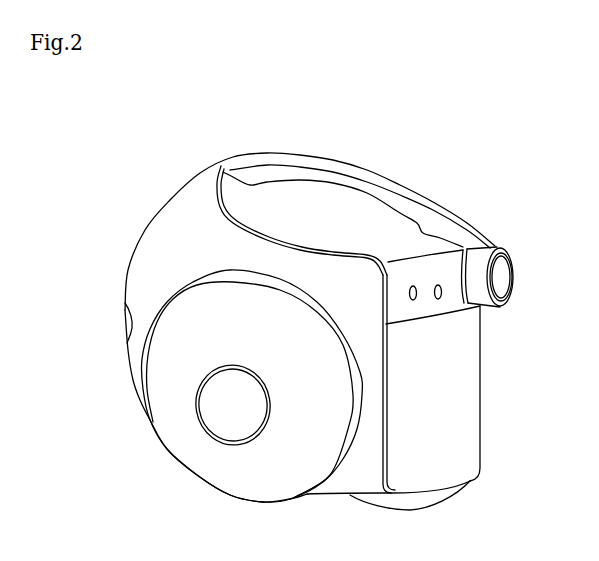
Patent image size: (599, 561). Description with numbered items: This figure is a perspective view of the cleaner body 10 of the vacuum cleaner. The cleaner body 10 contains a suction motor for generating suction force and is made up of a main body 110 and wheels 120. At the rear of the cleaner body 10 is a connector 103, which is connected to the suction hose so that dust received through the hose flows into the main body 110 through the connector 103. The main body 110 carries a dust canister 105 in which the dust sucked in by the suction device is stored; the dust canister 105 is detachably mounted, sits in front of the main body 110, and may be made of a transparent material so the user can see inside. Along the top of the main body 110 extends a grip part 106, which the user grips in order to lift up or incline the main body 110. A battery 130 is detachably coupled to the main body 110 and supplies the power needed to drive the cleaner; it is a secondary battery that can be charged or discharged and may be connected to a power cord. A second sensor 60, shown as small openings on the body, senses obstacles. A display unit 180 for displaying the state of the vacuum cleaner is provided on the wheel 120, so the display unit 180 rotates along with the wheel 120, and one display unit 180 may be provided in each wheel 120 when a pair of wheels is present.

The cleaner body 10 is at (434, 161).
The second sensor 60 is at (440, 298).
The connector 103 is at (507, 273).
The dust canister 105 is at (470, 412).
The grip part 106 is at (325, 180).
The main body 110 is at (172, 223).
The wheel 120 is at (163, 377).
The battery 130 is at (125, 313).
The display unit 180 is at (198, 405).